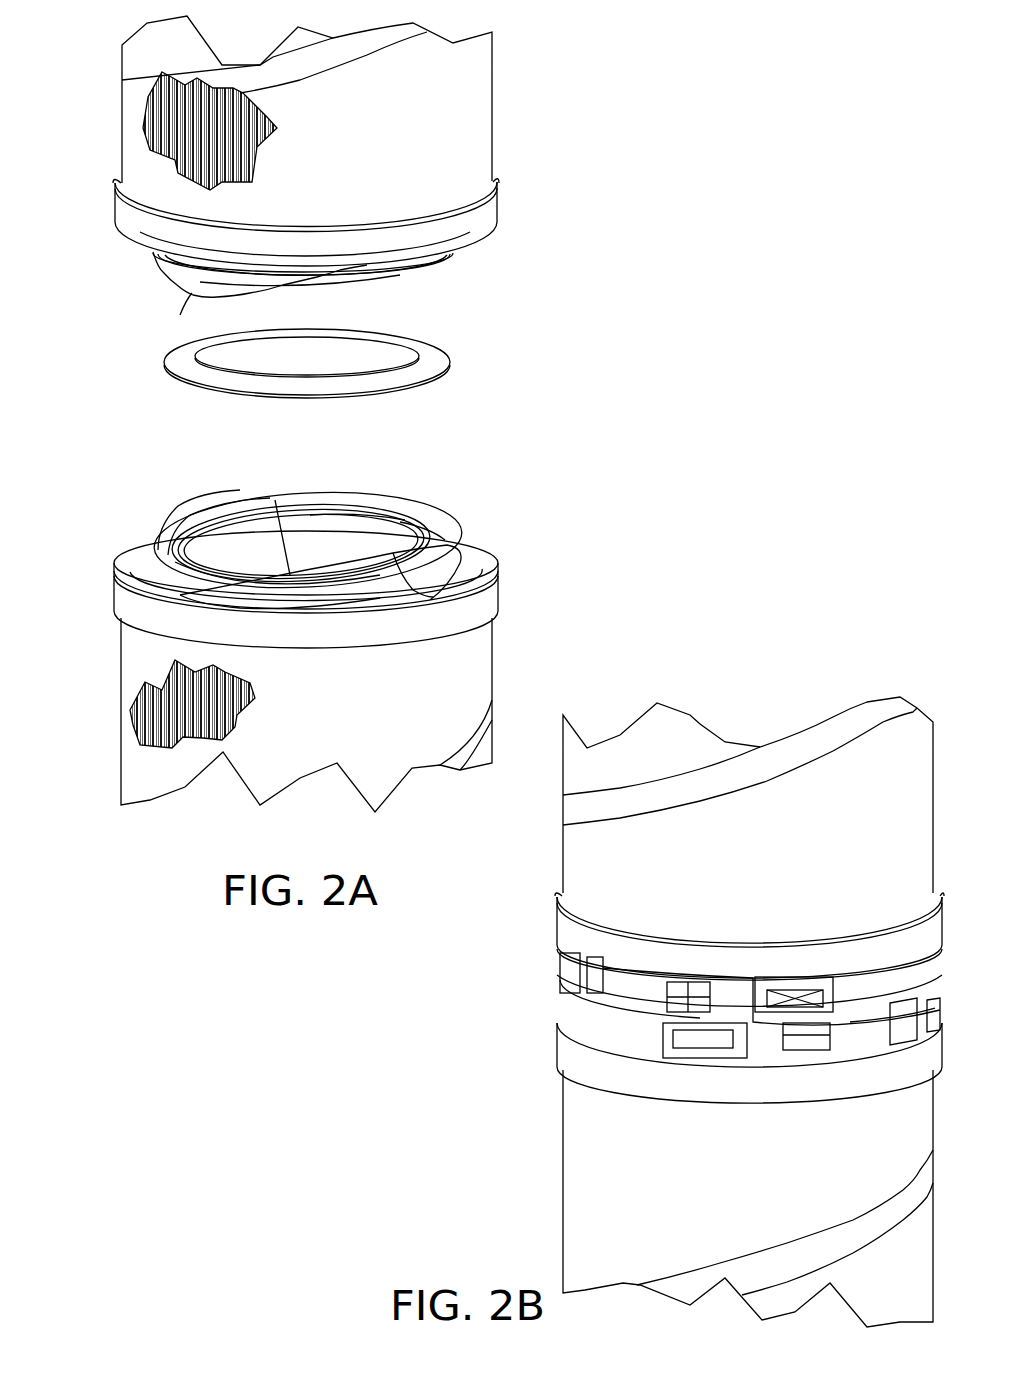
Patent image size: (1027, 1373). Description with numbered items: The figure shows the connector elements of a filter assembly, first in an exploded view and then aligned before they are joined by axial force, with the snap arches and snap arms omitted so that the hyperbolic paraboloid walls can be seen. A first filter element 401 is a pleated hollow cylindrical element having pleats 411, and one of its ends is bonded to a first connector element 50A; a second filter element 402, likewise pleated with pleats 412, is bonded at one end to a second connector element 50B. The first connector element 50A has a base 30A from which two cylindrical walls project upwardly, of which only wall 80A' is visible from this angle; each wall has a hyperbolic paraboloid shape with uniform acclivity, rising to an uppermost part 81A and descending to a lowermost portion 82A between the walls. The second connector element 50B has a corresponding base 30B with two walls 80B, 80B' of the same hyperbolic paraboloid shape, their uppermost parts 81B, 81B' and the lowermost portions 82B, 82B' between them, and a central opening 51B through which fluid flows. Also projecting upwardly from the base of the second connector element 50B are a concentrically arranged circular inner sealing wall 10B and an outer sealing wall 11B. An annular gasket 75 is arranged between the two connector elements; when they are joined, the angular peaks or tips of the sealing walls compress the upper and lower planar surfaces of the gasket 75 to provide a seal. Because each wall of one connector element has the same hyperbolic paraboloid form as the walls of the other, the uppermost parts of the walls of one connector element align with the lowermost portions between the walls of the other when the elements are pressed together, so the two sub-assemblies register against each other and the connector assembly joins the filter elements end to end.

In FIG. 2A, the first filter element 401 is at (453, 100).
In FIG. 2B, the first filter element 401 is at (598, 862).
In FIG. 2A, the second filter element 402 is at (280, 760).
In FIG. 2B, the second filter element 402 is at (588, 1160).
In FIG. 2A, the pleats 411 is at (178, 125).
In FIG. 2A, the pleats 412 is at (160, 705).
In FIG. 2A, the base 30A is at (447, 258).
In FIG. 2A, the base 30B is at (137, 560).
In FIG. 2A, the first connector element 50A is at (463, 228).
In FIG. 2B, the first connector element 50A is at (562, 918).
In FIG. 2A, the second connector element 50B is at (492, 588).
In FIG. 2B, the second connector element 50B is at (560, 1047).
In FIG. 2A, the central opening 51B is at (285, 562).
In FIG. 2A, the annular gasket 75 is at (180, 366).
In FIG. 2A, the wall 80A' is at (206, 274).
In FIG. 2A, the wall 80B is at (362, 540).
In FIG. 2A, the wall 80B' is at (149, 520).
In FIG. 2A, the uppermost part 81A is at (192, 293).
In FIG. 2A, the uppermost part 81B is at (374, 597).
In FIG. 2A, the uppermost part 81B' is at (217, 490).
In FIG. 2A, the lowermost portion 82A is at (382, 284).
In FIG. 2A, the lowermost portion 82B is at (205, 604).
In FIG. 2A, the lowermost portion 82B' is at (335, 486).
In FIG. 2A, the inner sealing wall 10B is at (353, 513).
In FIG. 2A, the outer sealing wall 11B is at (425, 522).